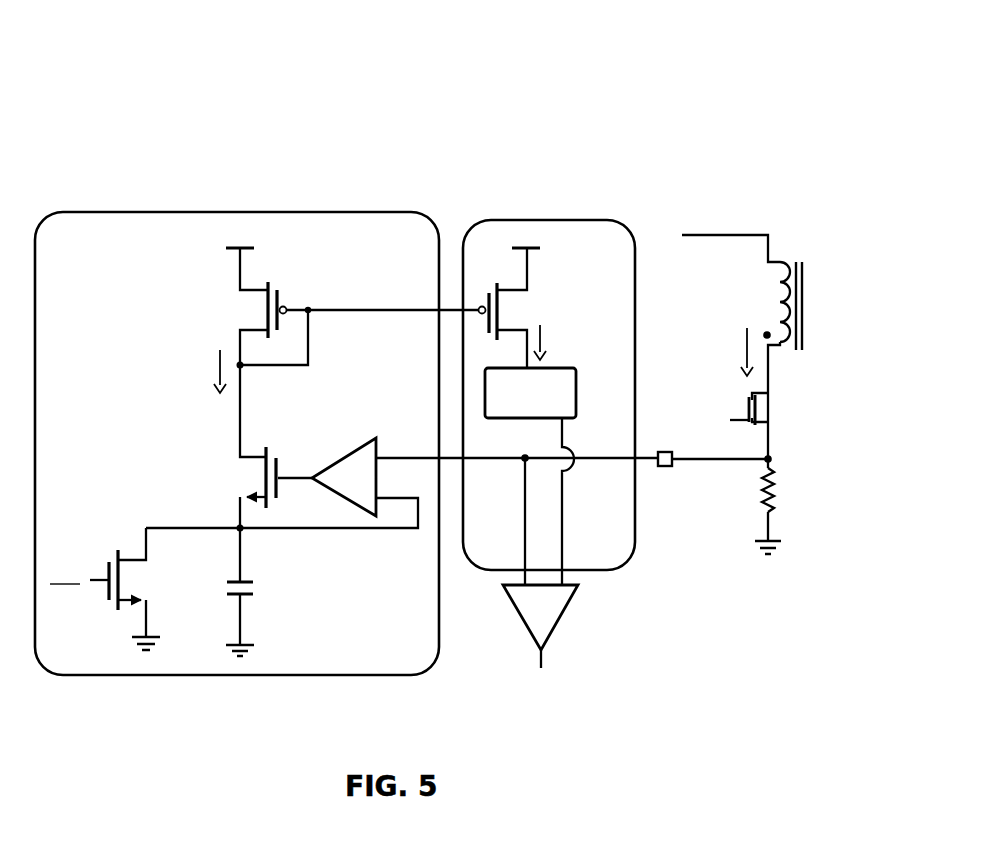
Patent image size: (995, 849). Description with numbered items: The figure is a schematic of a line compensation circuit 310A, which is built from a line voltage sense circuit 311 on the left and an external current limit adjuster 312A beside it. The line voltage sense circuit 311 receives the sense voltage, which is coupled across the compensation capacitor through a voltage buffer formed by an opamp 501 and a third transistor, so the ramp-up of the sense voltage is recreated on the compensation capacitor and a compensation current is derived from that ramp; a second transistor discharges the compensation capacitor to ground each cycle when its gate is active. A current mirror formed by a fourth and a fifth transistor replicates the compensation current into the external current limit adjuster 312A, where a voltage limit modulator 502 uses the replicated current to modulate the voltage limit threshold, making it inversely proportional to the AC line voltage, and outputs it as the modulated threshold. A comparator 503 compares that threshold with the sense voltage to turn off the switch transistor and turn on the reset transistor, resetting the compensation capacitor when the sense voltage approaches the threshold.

The line compensation circuit 310A is at (196, 136).
The line voltage sense circuit 311 is at (112, 341).
The external current limit adjuster 312A is at (612, 285).
The opamp 501 is at (347, 452).
The voltage limit modulator 502 is at (577, 384).
The comparator 503 is at (566, 609).